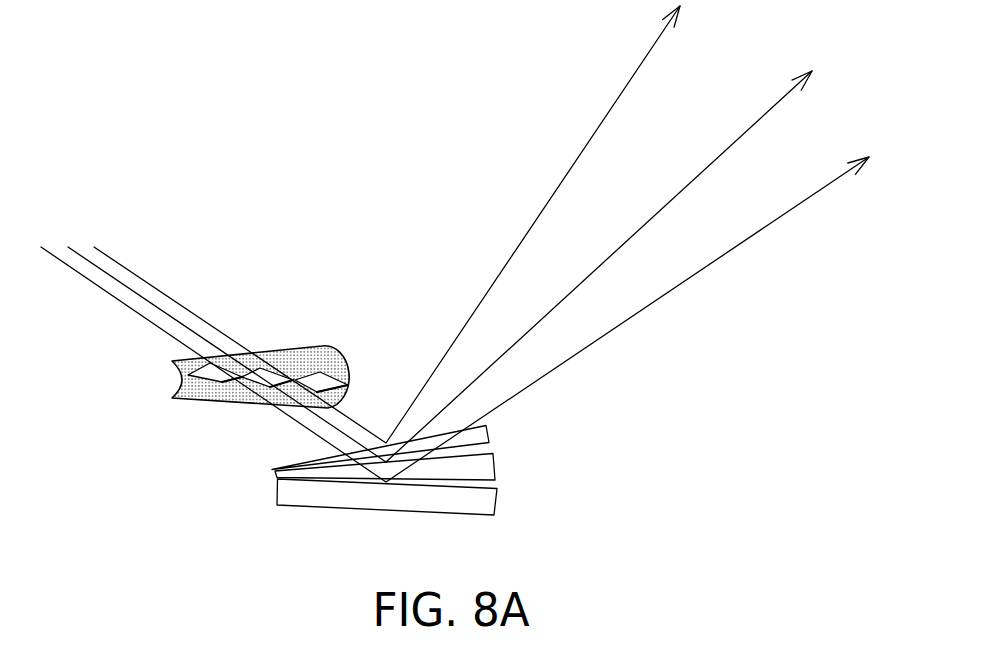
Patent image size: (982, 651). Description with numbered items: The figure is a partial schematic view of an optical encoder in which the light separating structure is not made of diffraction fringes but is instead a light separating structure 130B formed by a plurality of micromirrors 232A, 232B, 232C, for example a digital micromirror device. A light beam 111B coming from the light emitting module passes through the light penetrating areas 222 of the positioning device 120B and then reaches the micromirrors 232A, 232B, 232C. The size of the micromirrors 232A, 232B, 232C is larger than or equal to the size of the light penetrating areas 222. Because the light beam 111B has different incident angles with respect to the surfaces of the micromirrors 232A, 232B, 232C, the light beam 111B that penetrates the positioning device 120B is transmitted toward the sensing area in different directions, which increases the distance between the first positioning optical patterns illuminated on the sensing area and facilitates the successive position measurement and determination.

The light beam 111B is at (210, 322).
The positioning device 120B is at (320, 347).
The light penetrating areas 222 is at (198, 363).
The light separating structure 130B is at (440, 471).
The micromirror 232A is at (472, 441).
The micromirror 232B is at (482, 470).
The micromirror 232C is at (480, 505).